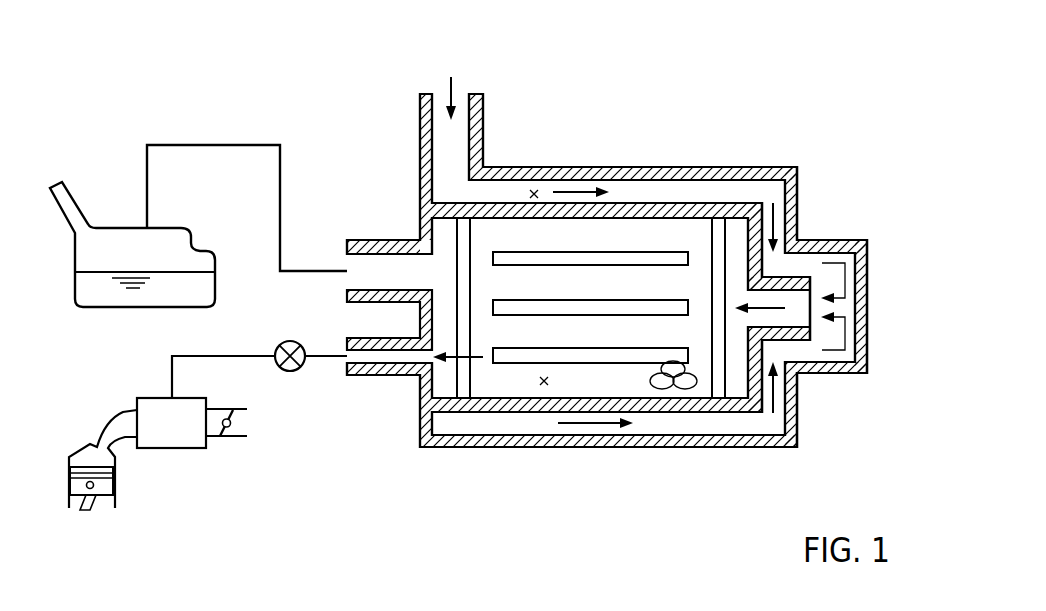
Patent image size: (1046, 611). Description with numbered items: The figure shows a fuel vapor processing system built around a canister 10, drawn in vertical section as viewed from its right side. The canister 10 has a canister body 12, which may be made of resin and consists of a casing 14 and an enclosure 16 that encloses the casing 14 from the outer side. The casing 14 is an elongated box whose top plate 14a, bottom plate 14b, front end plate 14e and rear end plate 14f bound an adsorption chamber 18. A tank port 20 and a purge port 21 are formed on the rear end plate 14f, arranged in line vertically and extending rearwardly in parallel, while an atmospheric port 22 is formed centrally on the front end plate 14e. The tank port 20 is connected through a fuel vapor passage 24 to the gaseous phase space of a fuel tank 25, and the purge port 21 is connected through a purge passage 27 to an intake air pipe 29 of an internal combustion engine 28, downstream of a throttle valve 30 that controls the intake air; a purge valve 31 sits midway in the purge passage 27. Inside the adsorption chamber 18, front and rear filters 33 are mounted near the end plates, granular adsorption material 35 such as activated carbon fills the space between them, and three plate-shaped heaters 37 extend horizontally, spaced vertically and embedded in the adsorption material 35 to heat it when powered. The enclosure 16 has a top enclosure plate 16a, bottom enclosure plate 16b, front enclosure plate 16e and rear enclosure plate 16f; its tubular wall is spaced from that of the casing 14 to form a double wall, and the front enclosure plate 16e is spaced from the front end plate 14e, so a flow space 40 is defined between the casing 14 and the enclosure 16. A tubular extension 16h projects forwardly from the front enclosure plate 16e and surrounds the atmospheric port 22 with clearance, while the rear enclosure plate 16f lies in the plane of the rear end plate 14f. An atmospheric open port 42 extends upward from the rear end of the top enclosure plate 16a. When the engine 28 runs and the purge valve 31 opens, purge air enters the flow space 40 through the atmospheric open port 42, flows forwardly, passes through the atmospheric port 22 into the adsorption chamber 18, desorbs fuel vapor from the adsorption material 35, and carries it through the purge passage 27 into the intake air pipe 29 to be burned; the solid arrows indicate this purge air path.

The canister 10 is at (731, 99).
The canister body 12 is at (686, 147).
The casing 14 is at (418, 218).
The top plate 14a is at (502, 210).
The bottom plate 14b is at (505, 405).
The front end plate 14e is at (762, 410).
The rear end plate 14f is at (425, 382).
The enclosure 16 is at (648, 166).
The top enclosure plate 16a is at (585, 170).
The bottom enclosure plate 16b is at (590, 440).
The front enclosure plate 16e is at (797, 203).
The rear enclosure plate 16f is at (427, 430).
The tubular extension 16h is at (833, 373).
The adsorption chamber 18 is at (545, 386).
The tank port 20 is at (367, 243).
The purge port 21 is at (365, 368).
The atmospheric port 22 is at (790, 280).
The fuel vapor passage 24 is at (195, 145).
The fuel tank 25 is at (190, 227).
The purge passage 27 is at (226, 352).
The internal combustion engine 28 is at (72, 452).
The intake air pipe 29 is at (172, 448).
The throttle valve 30 is at (222, 437).
The purge valve 31 is at (283, 371).
The filters 33 is at (461, 394).
The adsorption material 35 is at (664, 390).
The heaters 37 is at (678, 257).
The flow space 40 is at (537, 189).
The atmospheric open port 42 is at (421, 118).